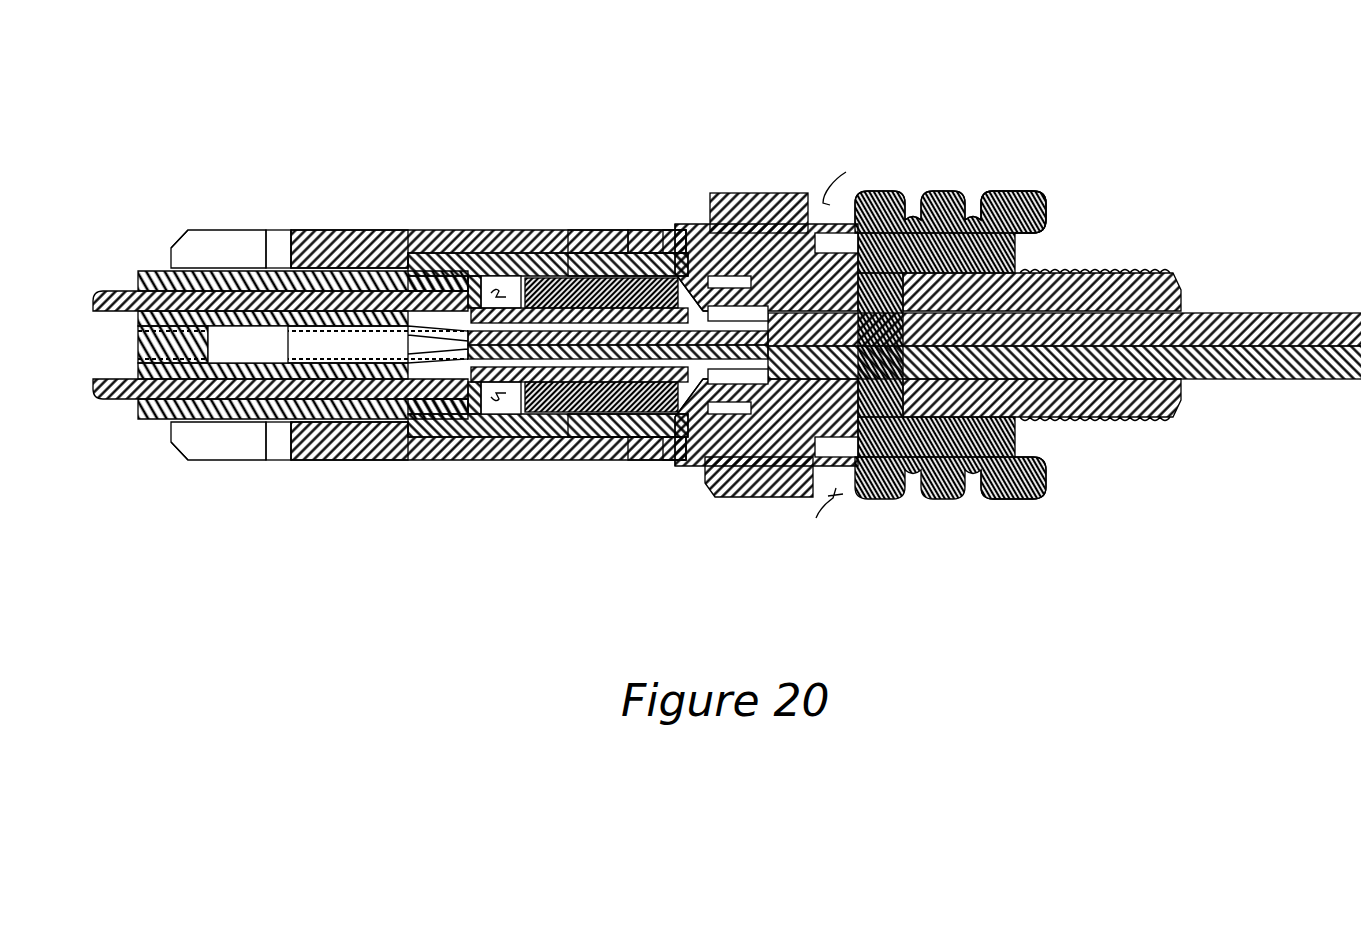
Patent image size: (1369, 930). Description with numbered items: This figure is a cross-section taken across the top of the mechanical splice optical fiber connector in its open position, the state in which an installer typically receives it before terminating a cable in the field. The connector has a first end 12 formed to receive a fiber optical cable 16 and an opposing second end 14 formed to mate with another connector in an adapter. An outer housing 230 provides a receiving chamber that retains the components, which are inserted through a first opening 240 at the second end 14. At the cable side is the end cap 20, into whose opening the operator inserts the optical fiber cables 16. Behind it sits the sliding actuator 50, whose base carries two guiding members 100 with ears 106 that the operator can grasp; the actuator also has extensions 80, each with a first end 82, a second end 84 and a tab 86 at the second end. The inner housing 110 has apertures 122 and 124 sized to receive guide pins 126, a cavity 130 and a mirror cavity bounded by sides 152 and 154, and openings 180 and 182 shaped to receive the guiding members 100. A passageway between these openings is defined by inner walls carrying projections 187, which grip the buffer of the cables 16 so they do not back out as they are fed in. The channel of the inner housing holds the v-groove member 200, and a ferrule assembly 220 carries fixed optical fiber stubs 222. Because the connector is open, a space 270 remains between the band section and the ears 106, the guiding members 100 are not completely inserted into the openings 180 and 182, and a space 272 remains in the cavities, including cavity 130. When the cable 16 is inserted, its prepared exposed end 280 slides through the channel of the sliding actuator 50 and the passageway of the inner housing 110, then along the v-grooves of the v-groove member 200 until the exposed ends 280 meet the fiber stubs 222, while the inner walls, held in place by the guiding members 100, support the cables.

The first end 12 is at (1172, 290).
The second end 14 is at (158, 258).
The fiber optical cable 16 is at (1090, 267).
The end cap 20 is at (1051, 299).
The sliding actuator 50 is at (970, 366).
The extension 80 is at (625, 220).
The first end 82 is at (545, 210).
The second end 84 is at (702, 218).
The tab 86 is at (655, 218).
The guiding member 100 is at (882, 218).
The ear 106 is at (993, 218).
The inner housing 110 is at (592, 220).
The aperture 122 is at (417, 432).
The aperture 124 is at (452, 220).
The guide pin 126 is at (258, 260).
The cavity 130 is at (447, 447).
The side 152 is at (477, 222).
The side 154 is at (760, 210).
The opening 180 is at (805, 220).
The opening 182 is at (793, 492).
The projection 187 is at (818, 218).
The v-groove member 200 is at (517, 458).
The ferrule assembly 220 is at (142, 420).
The optical fiber stub 222 is at (357, 220).
The outer housing 230 is at (402, 220).
The first opening 240 is at (578, 458).
The space 270 is at (852, 351).
The space 272 is at (500, 222).
The exposed end 280 is at (662, 220).